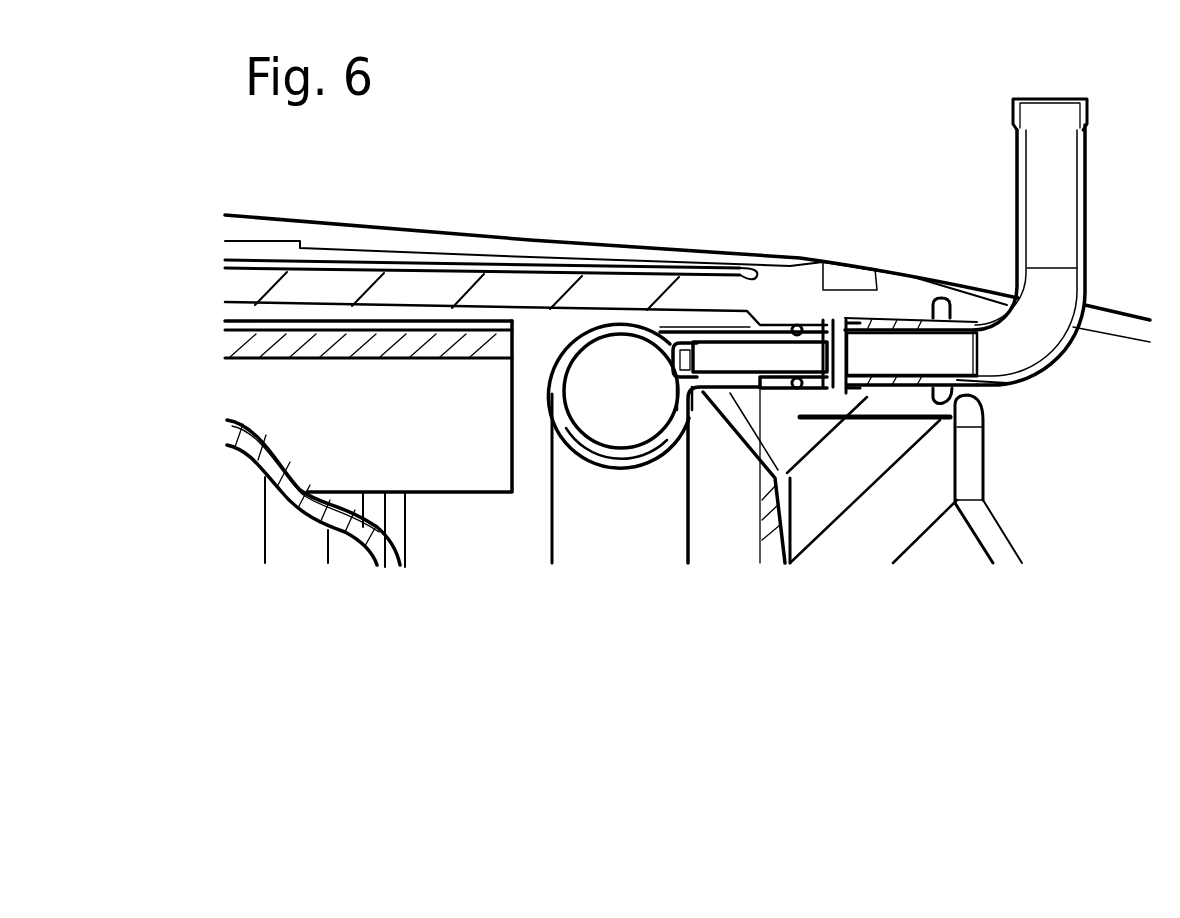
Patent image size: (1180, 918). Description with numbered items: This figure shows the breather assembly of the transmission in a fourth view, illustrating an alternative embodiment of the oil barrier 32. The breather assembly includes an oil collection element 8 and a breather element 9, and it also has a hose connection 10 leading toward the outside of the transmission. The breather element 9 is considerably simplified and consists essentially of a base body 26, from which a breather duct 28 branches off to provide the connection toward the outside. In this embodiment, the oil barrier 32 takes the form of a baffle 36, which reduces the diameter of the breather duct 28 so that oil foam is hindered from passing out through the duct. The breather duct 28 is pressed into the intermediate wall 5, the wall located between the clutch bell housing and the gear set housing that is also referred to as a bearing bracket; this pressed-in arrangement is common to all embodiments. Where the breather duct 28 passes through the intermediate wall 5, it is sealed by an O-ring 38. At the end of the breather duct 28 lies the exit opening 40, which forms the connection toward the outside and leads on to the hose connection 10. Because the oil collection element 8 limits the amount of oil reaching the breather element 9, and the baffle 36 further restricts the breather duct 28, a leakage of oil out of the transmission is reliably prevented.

The intermediate wall 5 is at (847, 530).
The oil collection element 8 is at (307, 407).
The breather element 9 is at (605, 288).
The hose connection 10 is at (1052, 207).
The base body 26 is at (587, 327).
The breather duct 28 is at (713, 337).
The oil barrier 32 is at (748, 300).
The baffle 36 is at (680, 345).
The O-ring 38 is at (801, 322).
The exit opening 40 is at (817, 358).